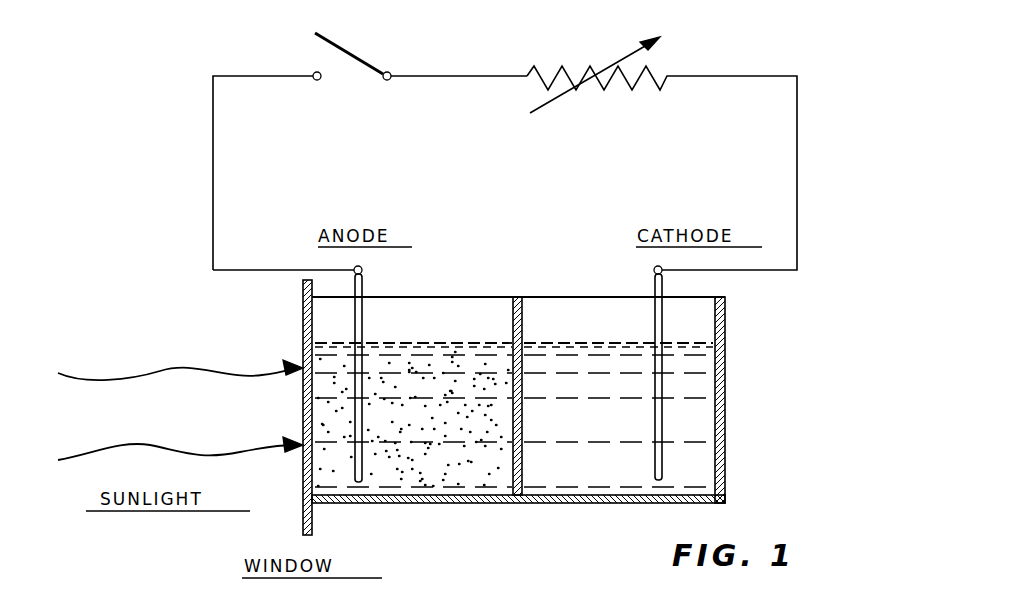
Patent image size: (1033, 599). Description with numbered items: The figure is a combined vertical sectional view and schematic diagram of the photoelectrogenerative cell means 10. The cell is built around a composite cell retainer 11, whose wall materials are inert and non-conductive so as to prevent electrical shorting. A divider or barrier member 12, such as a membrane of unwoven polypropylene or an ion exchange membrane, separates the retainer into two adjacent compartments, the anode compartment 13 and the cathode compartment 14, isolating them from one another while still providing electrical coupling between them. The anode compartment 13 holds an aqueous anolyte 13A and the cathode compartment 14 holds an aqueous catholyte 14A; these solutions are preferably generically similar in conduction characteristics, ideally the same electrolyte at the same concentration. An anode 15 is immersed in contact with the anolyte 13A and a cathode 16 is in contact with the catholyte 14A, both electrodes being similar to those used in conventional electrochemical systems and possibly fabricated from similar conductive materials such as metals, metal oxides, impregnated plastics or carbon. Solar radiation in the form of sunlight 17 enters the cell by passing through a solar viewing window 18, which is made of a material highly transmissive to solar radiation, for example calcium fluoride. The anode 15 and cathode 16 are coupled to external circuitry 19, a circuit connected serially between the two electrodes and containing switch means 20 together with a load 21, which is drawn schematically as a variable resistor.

The photoelectrogenerative cell means 10 is at (728, 432).
The composite cell retainer 11 is at (608, 503).
The divider or barrier member 12 is at (522, 297).
The anode compartment 13 is at (408, 318).
The anolyte 13A is at (452, 340).
The cathode compartment 14 is at (700, 304).
The catholyte 14A is at (605, 340).
The anode 15 is at (355, 307).
The cathode 16 is at (662, 325).
The sunlight 17 is at (124, 357).
The solar viewing window 18 is at (303, 410).
The external circuitry 19 is at (290, 147).
The switch means 20 is at (364, 60).
The load 21 is at (563, 70).